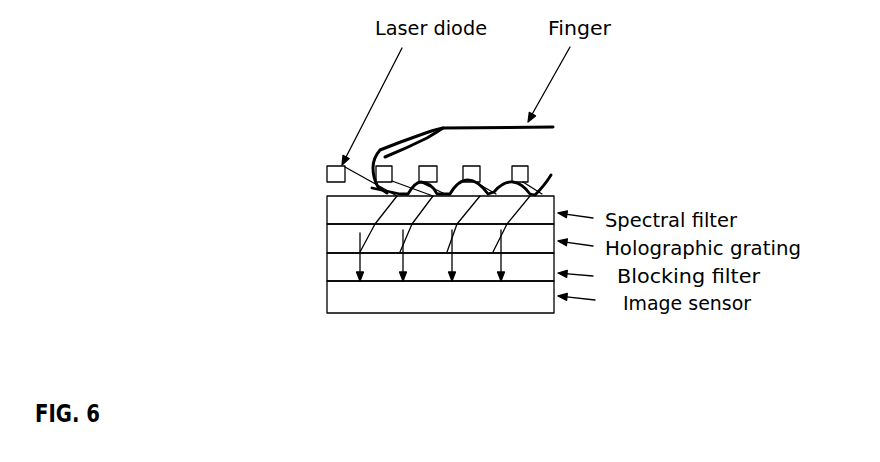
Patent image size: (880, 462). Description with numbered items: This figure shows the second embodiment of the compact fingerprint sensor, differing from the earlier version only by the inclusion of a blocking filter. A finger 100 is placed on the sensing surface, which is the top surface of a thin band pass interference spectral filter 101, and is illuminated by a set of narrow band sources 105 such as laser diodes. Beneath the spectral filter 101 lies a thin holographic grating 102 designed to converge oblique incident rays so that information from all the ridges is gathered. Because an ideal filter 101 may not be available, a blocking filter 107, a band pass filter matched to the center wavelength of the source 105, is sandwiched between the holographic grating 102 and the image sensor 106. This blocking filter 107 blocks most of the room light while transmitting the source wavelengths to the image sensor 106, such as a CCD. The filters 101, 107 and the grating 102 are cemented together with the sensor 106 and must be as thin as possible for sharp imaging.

The finger 100 is at (443, 133).
The source 105 is at (327, 168).
The spectral filter 101 is at (327, 213).
The holographic grating 102 is at (327, 239).
The blocking filter 107 is at (327, 270).
The image sensor 106 is at (327, 300).